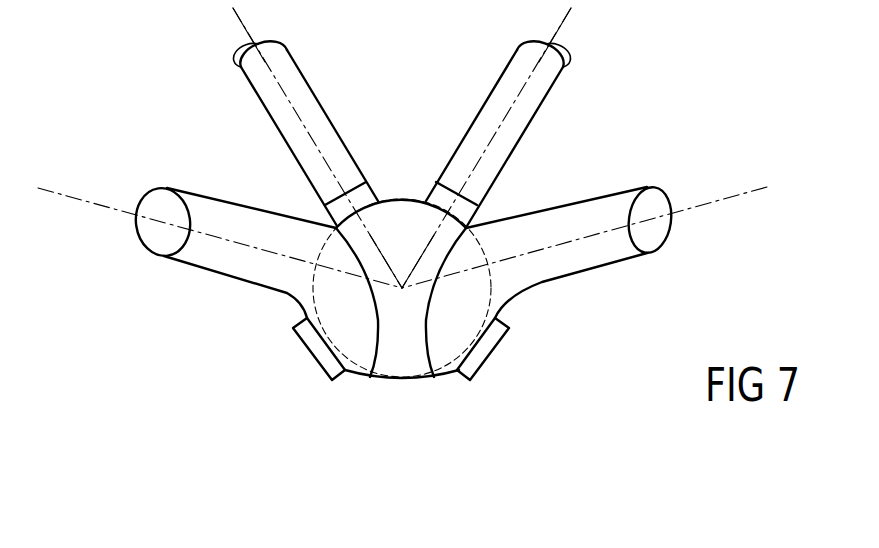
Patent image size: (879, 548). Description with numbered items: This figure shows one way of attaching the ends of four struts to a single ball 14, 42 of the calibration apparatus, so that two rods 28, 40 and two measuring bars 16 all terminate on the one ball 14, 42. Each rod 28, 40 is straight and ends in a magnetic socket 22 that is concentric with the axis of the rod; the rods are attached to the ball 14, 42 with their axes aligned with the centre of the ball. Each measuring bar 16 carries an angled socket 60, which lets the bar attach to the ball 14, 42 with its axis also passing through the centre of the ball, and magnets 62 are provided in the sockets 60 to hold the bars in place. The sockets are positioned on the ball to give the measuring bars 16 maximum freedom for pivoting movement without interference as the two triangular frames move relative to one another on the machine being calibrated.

The ball 14 is at (402, 245).
The ball 42 is at (400, 218).
The measuring bar 16 is at (222, 258).
The rod 28 is at (474, 148).
The rod 40 is at (292, 75).
The magnetic socket 22 is at (323, 210).
The magnet 62 is at (303, 340).
The angled socket 60 is at (443, 347).